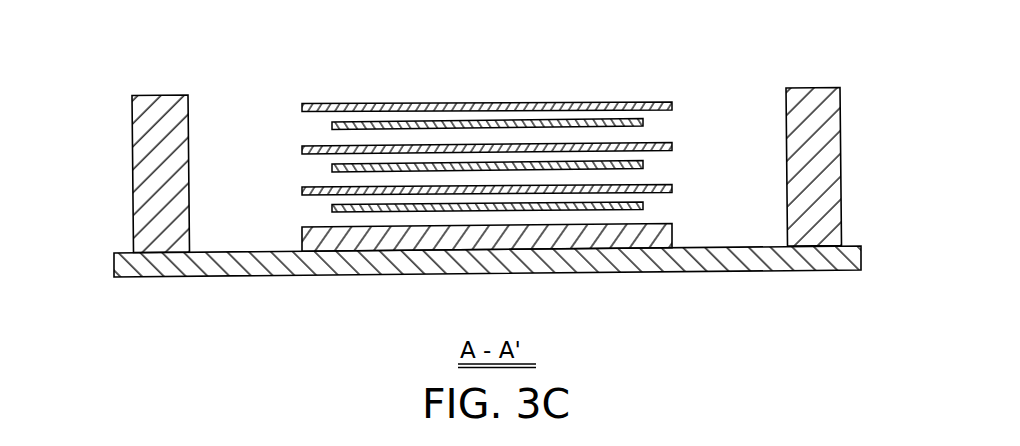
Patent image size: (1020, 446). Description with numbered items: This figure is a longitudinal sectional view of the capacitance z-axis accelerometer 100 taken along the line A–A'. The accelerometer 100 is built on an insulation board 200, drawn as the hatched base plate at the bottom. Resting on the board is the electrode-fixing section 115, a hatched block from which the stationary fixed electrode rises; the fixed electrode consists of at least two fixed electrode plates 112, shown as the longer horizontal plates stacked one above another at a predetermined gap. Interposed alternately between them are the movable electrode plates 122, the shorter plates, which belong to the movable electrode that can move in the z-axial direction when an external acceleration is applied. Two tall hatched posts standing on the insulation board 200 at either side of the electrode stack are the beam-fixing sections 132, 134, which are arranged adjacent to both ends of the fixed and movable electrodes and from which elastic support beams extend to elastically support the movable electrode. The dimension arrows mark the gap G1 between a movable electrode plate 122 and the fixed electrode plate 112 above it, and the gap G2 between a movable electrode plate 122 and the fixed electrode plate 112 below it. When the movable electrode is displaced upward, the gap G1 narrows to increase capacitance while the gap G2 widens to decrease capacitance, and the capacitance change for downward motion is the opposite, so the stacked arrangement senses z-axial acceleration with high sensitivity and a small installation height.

The accelerometer 100 is at (670, 68).
The fixed electrode plates 112 is at (565, 190).
The electrode-fixing section 115 is at (490, 247).
The movable electrode plates 122 is at (515, 205).
The beam-fixing section 132 is at (158, 103).
The beam-fixing section 134 is at (812, 90).
The insulation board 200 is at (605, 265).
The gap G1 is at (354, 137).
The gap G2 is at (402, 107).